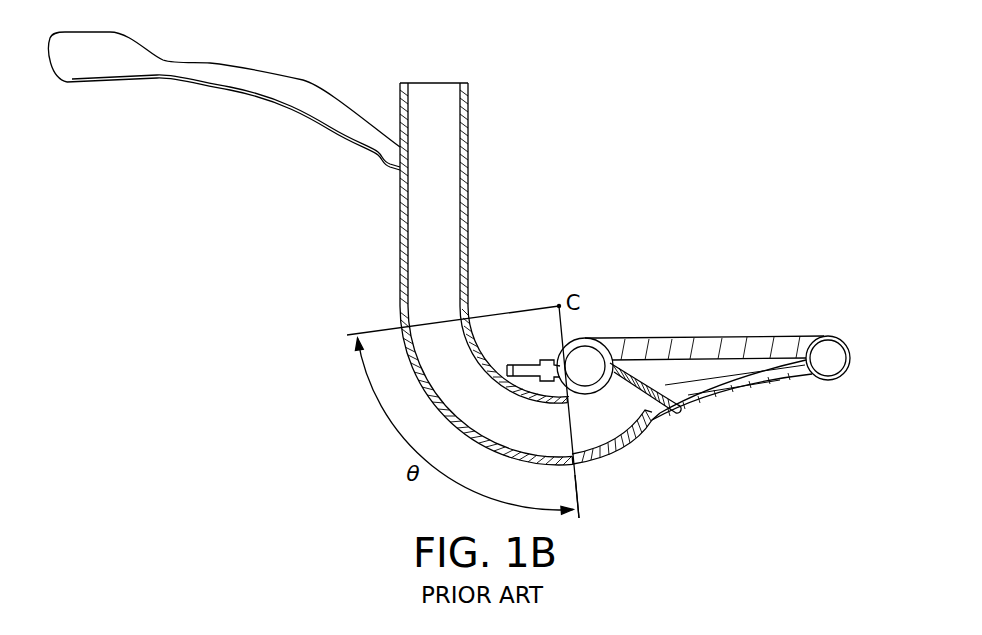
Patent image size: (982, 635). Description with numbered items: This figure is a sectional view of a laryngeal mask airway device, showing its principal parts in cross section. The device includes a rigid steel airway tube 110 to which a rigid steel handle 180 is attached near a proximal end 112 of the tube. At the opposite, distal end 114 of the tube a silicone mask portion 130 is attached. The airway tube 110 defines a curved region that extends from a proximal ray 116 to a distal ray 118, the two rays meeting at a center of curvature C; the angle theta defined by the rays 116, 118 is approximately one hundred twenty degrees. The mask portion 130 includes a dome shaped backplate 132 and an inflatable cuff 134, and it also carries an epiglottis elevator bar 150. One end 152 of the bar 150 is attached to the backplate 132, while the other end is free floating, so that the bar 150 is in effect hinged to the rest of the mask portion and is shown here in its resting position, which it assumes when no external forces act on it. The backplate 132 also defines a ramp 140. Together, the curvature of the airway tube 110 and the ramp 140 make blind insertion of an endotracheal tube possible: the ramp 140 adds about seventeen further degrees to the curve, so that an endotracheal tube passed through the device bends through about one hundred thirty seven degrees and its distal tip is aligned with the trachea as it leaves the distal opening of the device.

The airway tube 110 is at (394, 213).
The proximal end 112 is at (434, 82).
The distal end 114 is at (576, 462).
The proximal ray 116 is at (371, 330).
The distal ray 118 is at (583, 502).
The mask portion 130 is at (800, 328).
The backplate 132 is at (727, 394).
The inflatable cuff 134 is at (851, 361).
The ramp 140 is at (628, 428).
The epiglottis elevator bar 150 is at (663, 378).
The end of bar 152 is at (623, 356).
The handle 180 is at (224, 72).